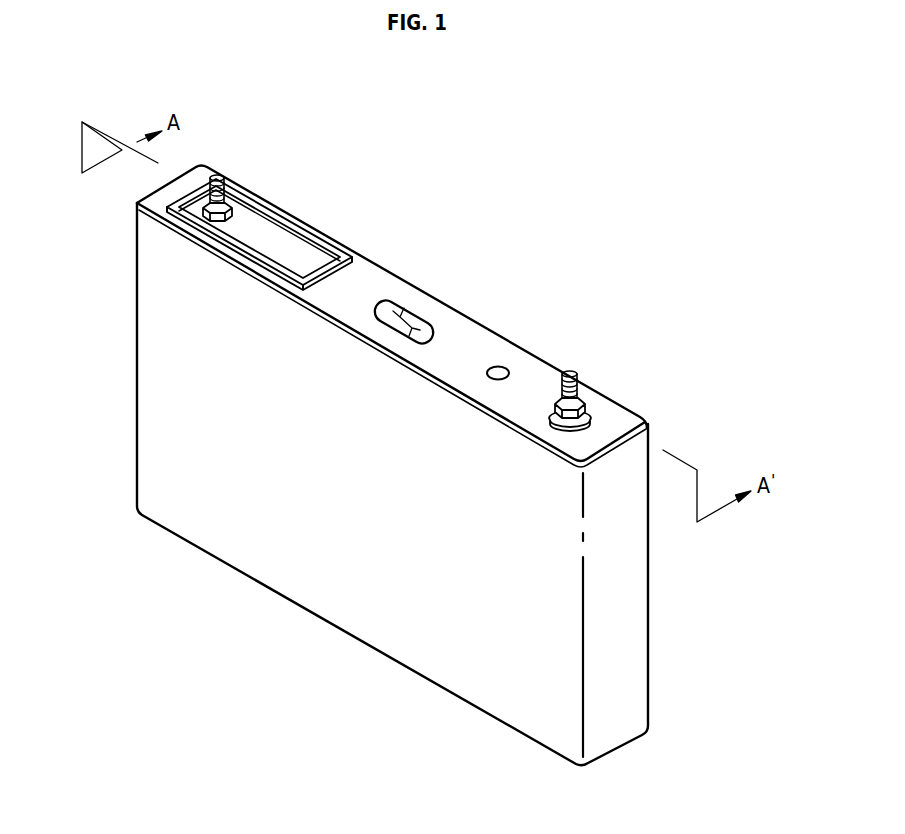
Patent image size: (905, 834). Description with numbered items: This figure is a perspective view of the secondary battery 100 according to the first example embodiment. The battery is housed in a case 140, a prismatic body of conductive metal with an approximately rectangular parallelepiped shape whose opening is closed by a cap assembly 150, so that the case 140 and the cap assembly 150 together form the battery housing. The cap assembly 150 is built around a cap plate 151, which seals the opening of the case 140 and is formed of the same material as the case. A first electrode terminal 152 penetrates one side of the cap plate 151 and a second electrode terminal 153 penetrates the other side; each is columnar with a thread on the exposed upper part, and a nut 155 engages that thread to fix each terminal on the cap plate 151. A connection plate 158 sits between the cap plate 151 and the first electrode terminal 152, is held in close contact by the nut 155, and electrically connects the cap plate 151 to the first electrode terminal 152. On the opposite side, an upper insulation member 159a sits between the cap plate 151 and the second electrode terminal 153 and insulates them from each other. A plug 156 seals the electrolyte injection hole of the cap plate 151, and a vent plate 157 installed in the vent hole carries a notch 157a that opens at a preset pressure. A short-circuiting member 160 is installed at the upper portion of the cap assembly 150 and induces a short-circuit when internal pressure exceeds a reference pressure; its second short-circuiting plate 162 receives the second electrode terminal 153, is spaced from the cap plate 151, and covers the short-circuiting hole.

The secondary battery 100 is at (430, 153).
The case 140 is at (342, 613).
The cap assembly 150 is at (483, 326).
The cap plate 151 is at (367, 277).
The first electrode terminal 152 is at (570, 373).
The second electrode terminal 153 is at (217, 174).
The nut 155 is at (198, 219).
The plug 156 is at (502, 368).
The vent plate 157 is at (408, 305).
The notch 157a is at (413, 323).
The connection plate 158 is at (591, 417).
The upper insulation member 159a is at (311, 237).
The short-circuiting member 160 is at (279, 234).
The second short-circuiting plate 162 is at (245, 216).